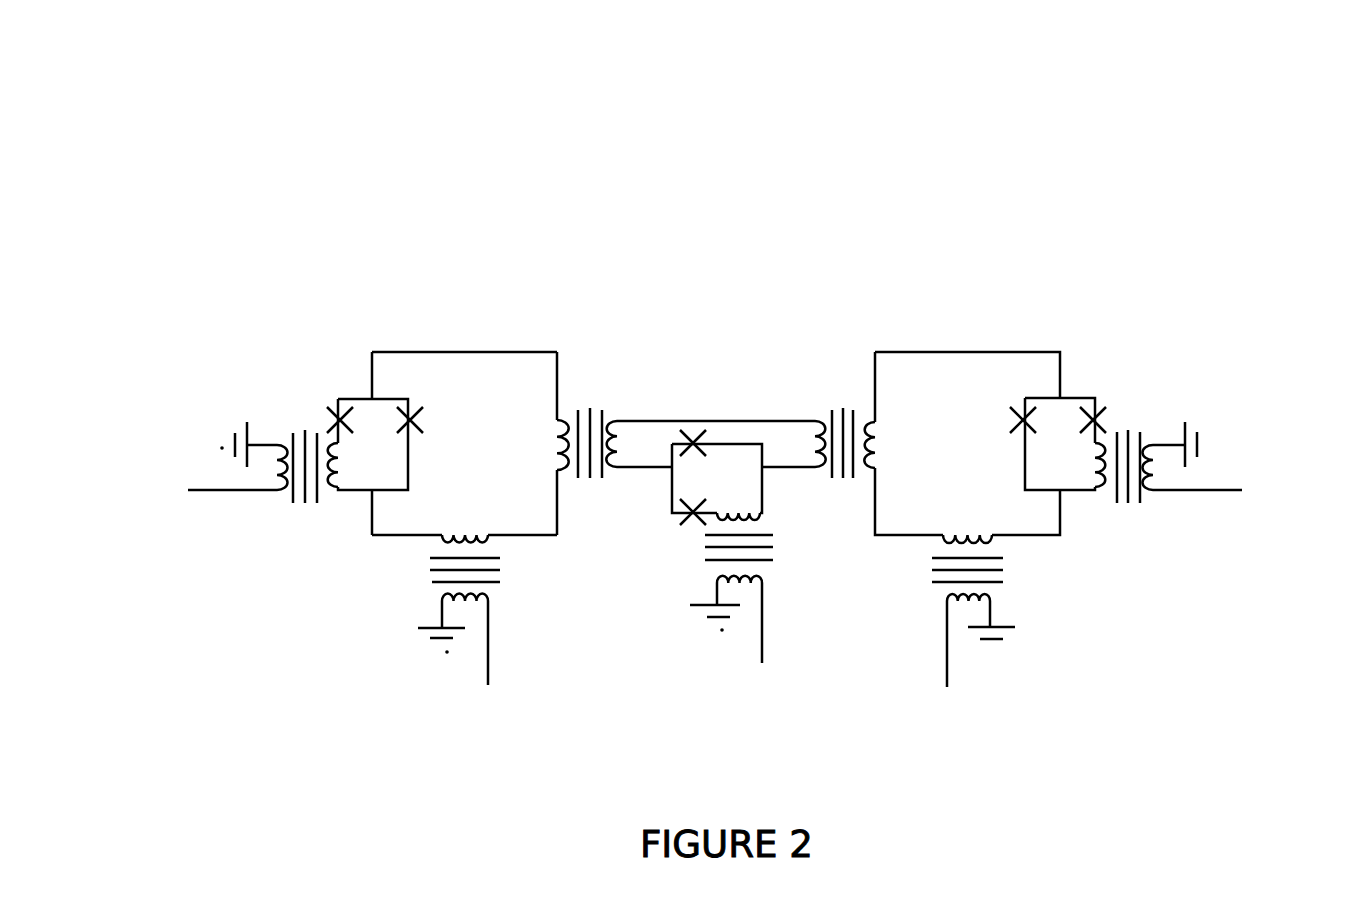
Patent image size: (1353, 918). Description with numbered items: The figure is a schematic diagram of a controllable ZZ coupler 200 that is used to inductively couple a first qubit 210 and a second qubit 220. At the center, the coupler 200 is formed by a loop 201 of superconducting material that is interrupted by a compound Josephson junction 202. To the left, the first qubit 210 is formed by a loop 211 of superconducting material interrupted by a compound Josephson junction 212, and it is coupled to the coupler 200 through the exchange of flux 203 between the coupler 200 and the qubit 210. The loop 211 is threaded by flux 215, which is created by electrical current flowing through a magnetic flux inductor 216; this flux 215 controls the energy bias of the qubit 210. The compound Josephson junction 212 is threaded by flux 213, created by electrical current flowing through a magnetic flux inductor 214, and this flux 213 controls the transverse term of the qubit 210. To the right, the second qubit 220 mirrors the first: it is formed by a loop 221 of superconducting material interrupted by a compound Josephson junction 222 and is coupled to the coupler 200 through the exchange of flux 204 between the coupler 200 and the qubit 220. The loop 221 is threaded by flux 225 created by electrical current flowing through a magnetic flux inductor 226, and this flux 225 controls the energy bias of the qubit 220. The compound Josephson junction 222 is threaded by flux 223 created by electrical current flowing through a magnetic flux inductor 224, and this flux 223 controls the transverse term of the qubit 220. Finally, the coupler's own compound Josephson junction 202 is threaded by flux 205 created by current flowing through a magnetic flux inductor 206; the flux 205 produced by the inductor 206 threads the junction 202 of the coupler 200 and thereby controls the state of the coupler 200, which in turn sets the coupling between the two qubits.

The controllable ZZ coupler 200 is at (647, 395).
The loop 201 is at (749, 411).
The compound Josephson junction 202 is at (672, 517).
The flux 203 is at (592, 405).
The flux 204 is at (843, 404).
The flux 205 is at (776, 564).
The magnetic flux inductor 206 is at (740, 619).
The first qubit 210 is at (377, 562).
The loop 211 is at (477, 350).
The compound Josephson junction 212 is at (362, 397).
The flux 213 is at (305, 428).
The magnetic flux inductor 214 is at (248, 494).
The flux 215 is at (433, 585).
The magnetic flux inductor 216 is at (468, 655).
The second qubit 220 is at (1062, 564).
The loop 221 is at (956, 348).
The compound Josephson junction 222 is at (1070, 394).
The flux 223 is at (1128, 427).
The magnetic flux inductor 224 is at (1186, 494).
The flux 225 is at (1004, 586).
The magnetic flux inductor 226 is at (970, 656).